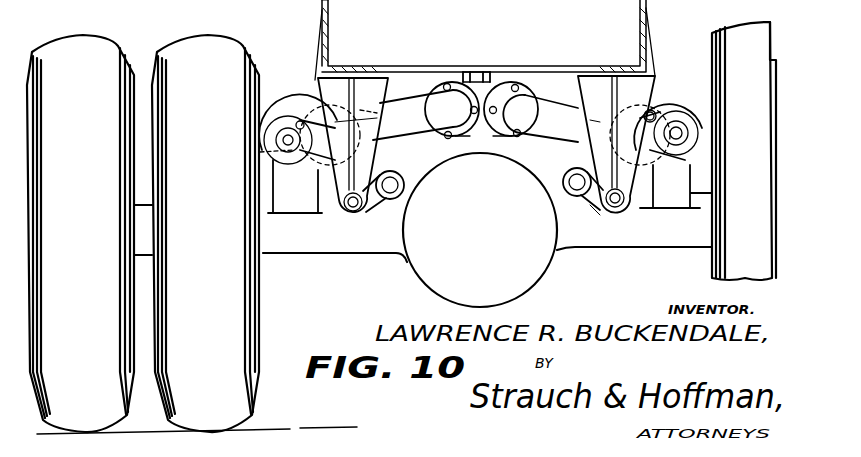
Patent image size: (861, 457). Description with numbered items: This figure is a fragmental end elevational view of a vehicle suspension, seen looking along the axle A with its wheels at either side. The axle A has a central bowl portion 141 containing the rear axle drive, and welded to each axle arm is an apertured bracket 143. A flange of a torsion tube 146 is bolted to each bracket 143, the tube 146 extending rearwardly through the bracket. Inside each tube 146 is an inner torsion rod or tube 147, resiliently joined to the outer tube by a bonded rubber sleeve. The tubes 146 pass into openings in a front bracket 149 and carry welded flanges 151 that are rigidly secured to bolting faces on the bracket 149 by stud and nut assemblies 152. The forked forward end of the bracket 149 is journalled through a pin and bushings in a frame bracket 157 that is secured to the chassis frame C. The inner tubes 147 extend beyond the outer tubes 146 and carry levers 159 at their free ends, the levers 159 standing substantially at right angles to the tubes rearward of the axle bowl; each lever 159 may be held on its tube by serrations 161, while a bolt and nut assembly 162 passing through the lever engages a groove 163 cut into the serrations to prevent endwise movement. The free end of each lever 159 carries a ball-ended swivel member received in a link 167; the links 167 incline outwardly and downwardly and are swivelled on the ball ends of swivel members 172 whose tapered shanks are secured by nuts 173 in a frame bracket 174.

The central bowl portion 141 is at (494, 244).
The apertured bracket 143 is at (287, 101).
The torsion tube 146 is at (418, 92).
The inner torsion rod or tube 147 is at (278, 141).
The front bracket 149 is at (500, 78).
The welded flange 151 is at (520, 78).
The stud and nut assembly 152 is at (512, 150).
The frame bracket 157 is at (486, 67).
The lever 159 is at (318, 187).
The serrations 161 is at (228, 7).
The bolt and nut assembly 162 is at (652, 112).
The groove 163 is at (172, 7).
The link 167 is at (382, 205).
The swivel member 172 is at (353, 209).
The nut 173 is at (597, 217).
The frame bracket 174 is at (402, 106).
The axle A is at (670, 240).
The chassis frame C is at (336, 33).